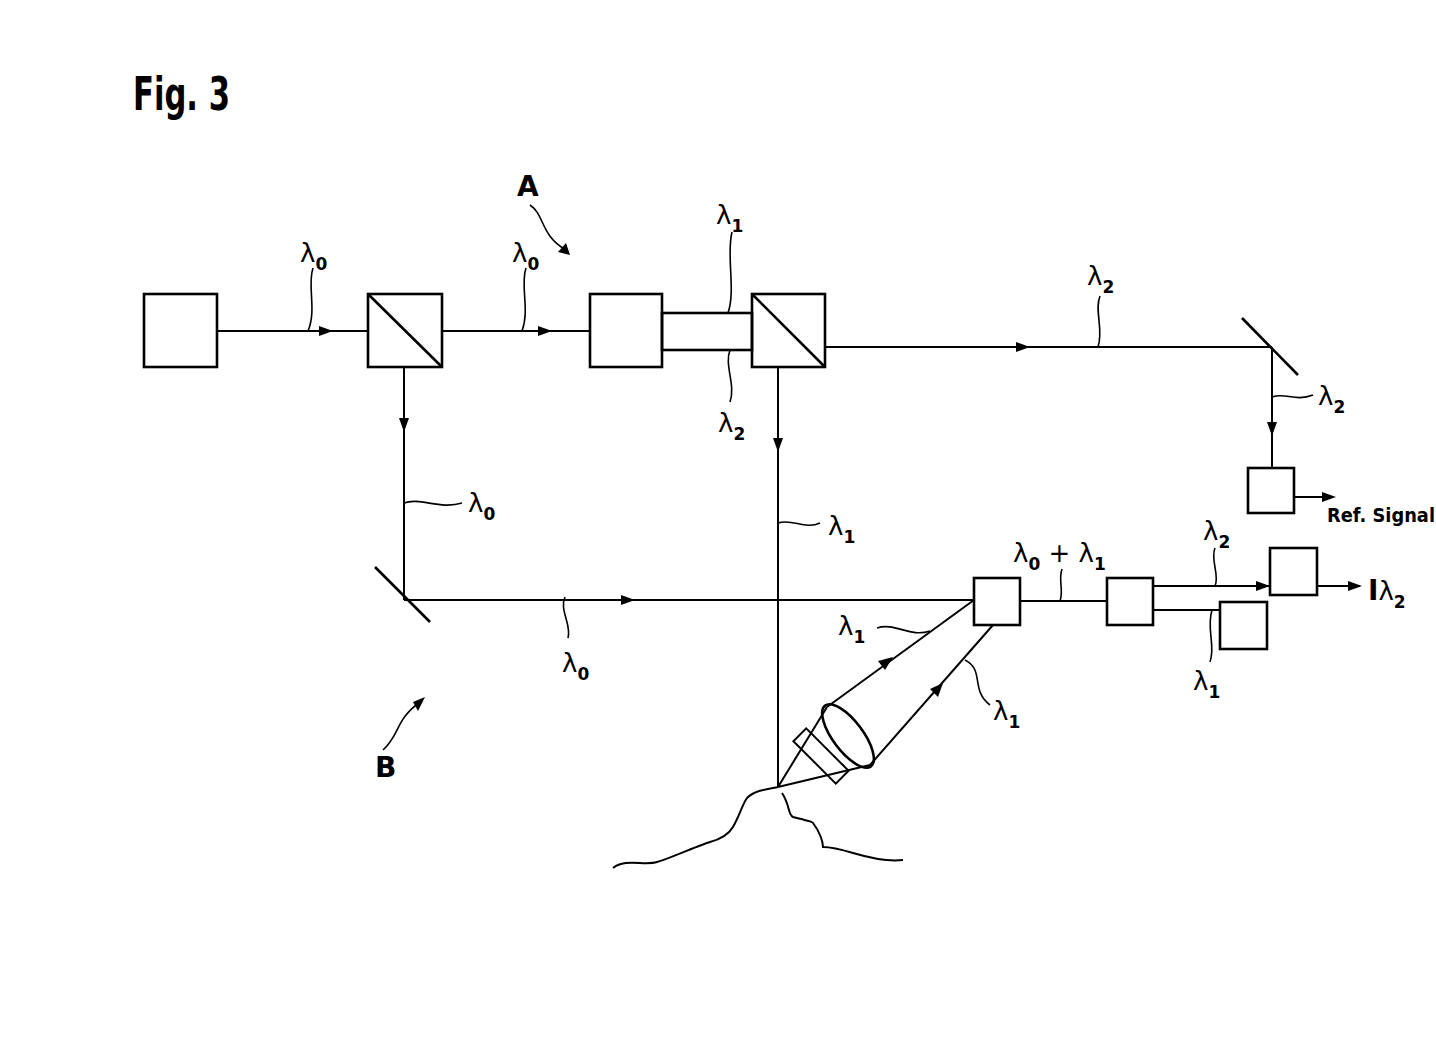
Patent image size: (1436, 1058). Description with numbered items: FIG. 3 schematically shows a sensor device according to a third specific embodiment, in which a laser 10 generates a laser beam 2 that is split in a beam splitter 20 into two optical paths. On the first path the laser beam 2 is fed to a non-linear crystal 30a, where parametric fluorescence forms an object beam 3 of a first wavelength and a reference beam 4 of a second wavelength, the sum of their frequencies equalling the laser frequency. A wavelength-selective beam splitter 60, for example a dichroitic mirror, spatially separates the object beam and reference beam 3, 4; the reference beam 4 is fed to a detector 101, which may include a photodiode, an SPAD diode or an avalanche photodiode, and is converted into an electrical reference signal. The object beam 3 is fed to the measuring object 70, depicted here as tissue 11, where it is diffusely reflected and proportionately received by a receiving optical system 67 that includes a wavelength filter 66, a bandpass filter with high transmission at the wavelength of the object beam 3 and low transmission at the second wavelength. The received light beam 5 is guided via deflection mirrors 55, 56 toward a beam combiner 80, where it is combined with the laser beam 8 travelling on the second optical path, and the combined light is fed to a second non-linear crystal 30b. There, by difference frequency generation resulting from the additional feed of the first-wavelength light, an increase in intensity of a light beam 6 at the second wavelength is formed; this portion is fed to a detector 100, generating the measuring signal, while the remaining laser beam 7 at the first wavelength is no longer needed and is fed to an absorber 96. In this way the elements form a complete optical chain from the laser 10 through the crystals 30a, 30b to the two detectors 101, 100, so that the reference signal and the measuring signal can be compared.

The laser 10 is at (178, 294).
The laser beam 2 is at (257, 331).
The beam splitter 20 is at (403, 294).
The non-linear crystal 30a is at (623, 294).
The object beam 3 is at (689, 313).
The reference beam 4 is at (680, 350).
The wavelength-selective beam splitter 60 is at (786, 294).
The deflection mirror 56 is at (1253, 328).
The detector 101 is at (1285, 468).
The laser beam 8 is at (404, 466).
The deflection mirror 55 is at (410, 607).
The beam combiner 80 is at (993, 578).
The light beam 5 is at (1088, 601).
The non-linear crystal 30b is at (1130, 625).
The light beam 6 is at (1173, 586).
The laser beam 7 is at (1168, 610).
The absorber 96 is at (1248, 649).
The detector 100 is at (1295, 595).
The receiving optical system 67 is at (877, 745).
The wavelength filter 66 is at (847, 777).
The tissue 11 is at (803, 770).
The measuring object 70 is at (747, 798).